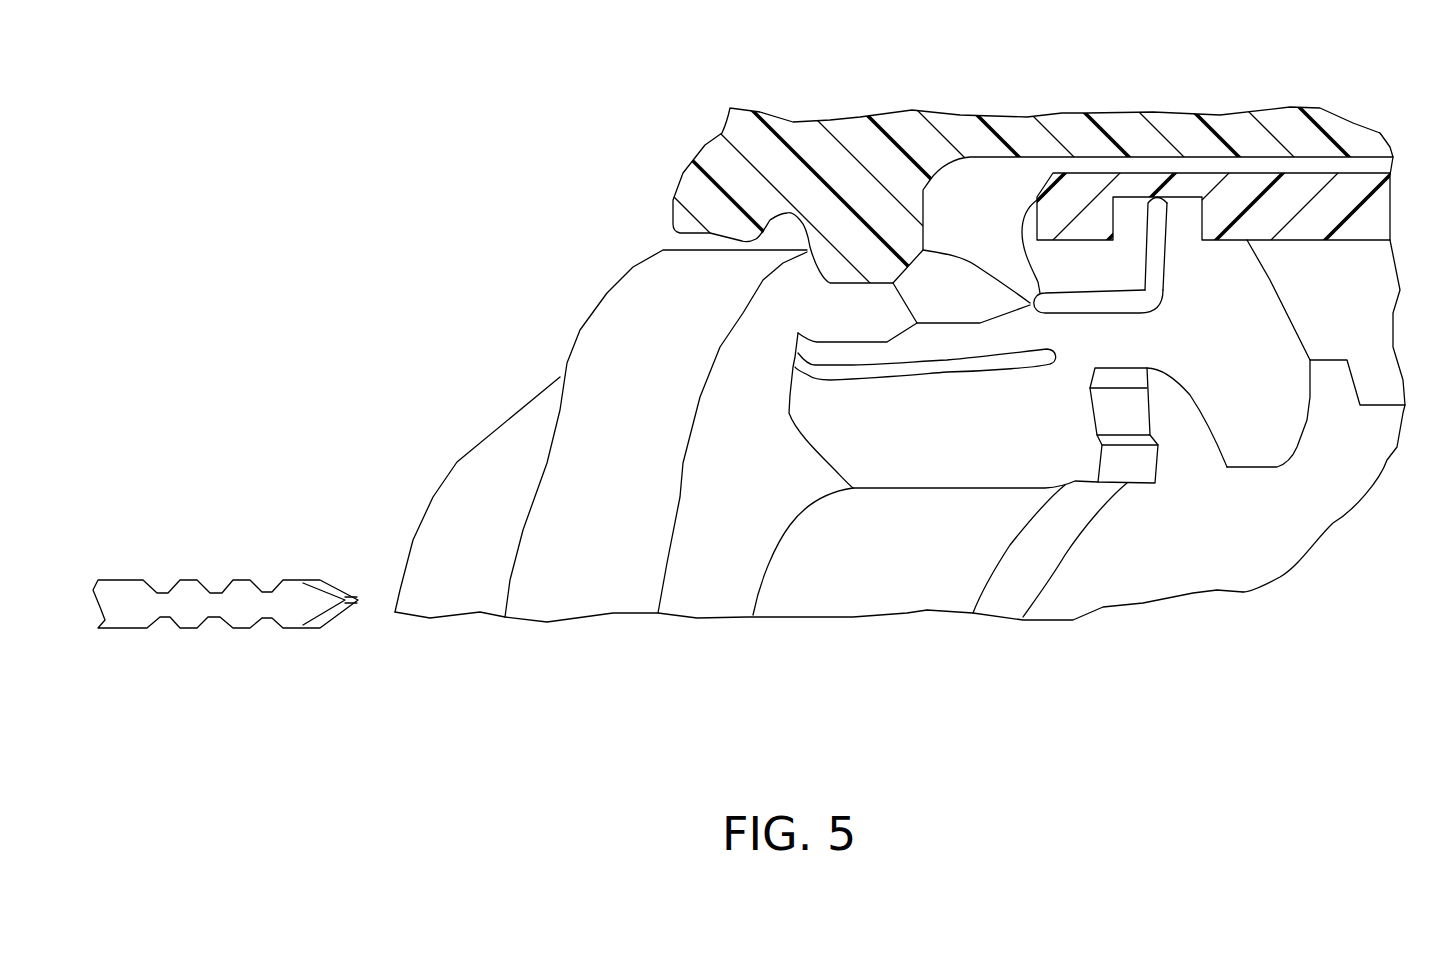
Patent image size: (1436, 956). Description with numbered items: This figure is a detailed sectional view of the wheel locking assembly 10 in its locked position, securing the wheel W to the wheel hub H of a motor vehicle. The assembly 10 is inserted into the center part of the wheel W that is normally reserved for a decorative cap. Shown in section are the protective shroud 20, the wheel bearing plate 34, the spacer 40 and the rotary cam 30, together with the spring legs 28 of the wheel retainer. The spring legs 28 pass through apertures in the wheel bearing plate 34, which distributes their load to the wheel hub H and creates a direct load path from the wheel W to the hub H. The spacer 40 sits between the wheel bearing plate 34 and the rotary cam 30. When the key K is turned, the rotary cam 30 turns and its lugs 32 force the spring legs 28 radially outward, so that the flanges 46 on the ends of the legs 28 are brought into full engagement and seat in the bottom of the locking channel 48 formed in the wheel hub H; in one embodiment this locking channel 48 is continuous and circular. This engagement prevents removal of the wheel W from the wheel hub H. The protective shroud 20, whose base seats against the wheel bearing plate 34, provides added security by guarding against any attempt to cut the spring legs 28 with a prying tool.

The wheel W is at (910, 130).
The wheel hub H is at (1292, 190).
The locking channel 48 is at (1135, 210).
The flanges 46 is at (1183, 217).
The wheel locking assembly 10 is at (347, 467).
The protective shroud 20 is at (468, 500).
The wheel bearing plate 34 is at (630, 365).
The spring legs 28 is at (890, 447).
The spacer 40 is at (925, 577).
The rotary cam 30 is at (1135, 568).
The lugs 32 is at (1163, 400).
The key K is at (190, 597).